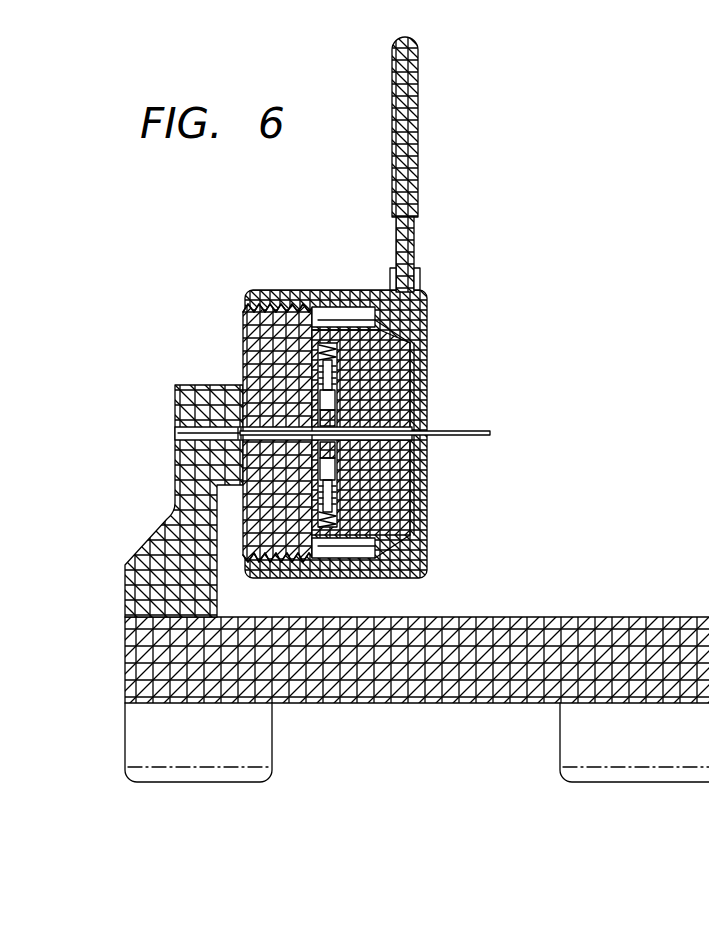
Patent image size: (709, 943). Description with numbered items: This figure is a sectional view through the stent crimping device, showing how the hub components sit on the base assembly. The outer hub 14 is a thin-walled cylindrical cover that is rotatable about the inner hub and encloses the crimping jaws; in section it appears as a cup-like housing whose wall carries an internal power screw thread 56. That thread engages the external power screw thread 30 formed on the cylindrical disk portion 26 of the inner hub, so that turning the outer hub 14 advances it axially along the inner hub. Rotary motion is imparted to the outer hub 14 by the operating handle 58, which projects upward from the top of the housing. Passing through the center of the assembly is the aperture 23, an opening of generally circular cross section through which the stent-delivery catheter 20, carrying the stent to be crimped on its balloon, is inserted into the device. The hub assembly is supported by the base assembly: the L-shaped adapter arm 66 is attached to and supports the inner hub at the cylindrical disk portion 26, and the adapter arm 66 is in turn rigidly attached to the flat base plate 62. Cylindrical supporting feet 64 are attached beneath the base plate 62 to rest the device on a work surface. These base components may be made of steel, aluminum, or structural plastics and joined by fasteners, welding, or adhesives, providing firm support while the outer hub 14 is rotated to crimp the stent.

The outer hub 14 is at (370, 396).
The stent-delivery catheter 20 is at (460, 438).
The aperture 23 is at (340, 412).
The cylindrical disk portion 26 is at (243, 355).
The external power screw thread 30 is at (246, 303).
The internal power screw thread 56 is at (305, 304).
The operating handle 58 is at (418, 100).
The base plate 62 is at (125, 672).
The supporting feet 64 is at (272, 752).
The adapter arm 66 is at (168, 518).